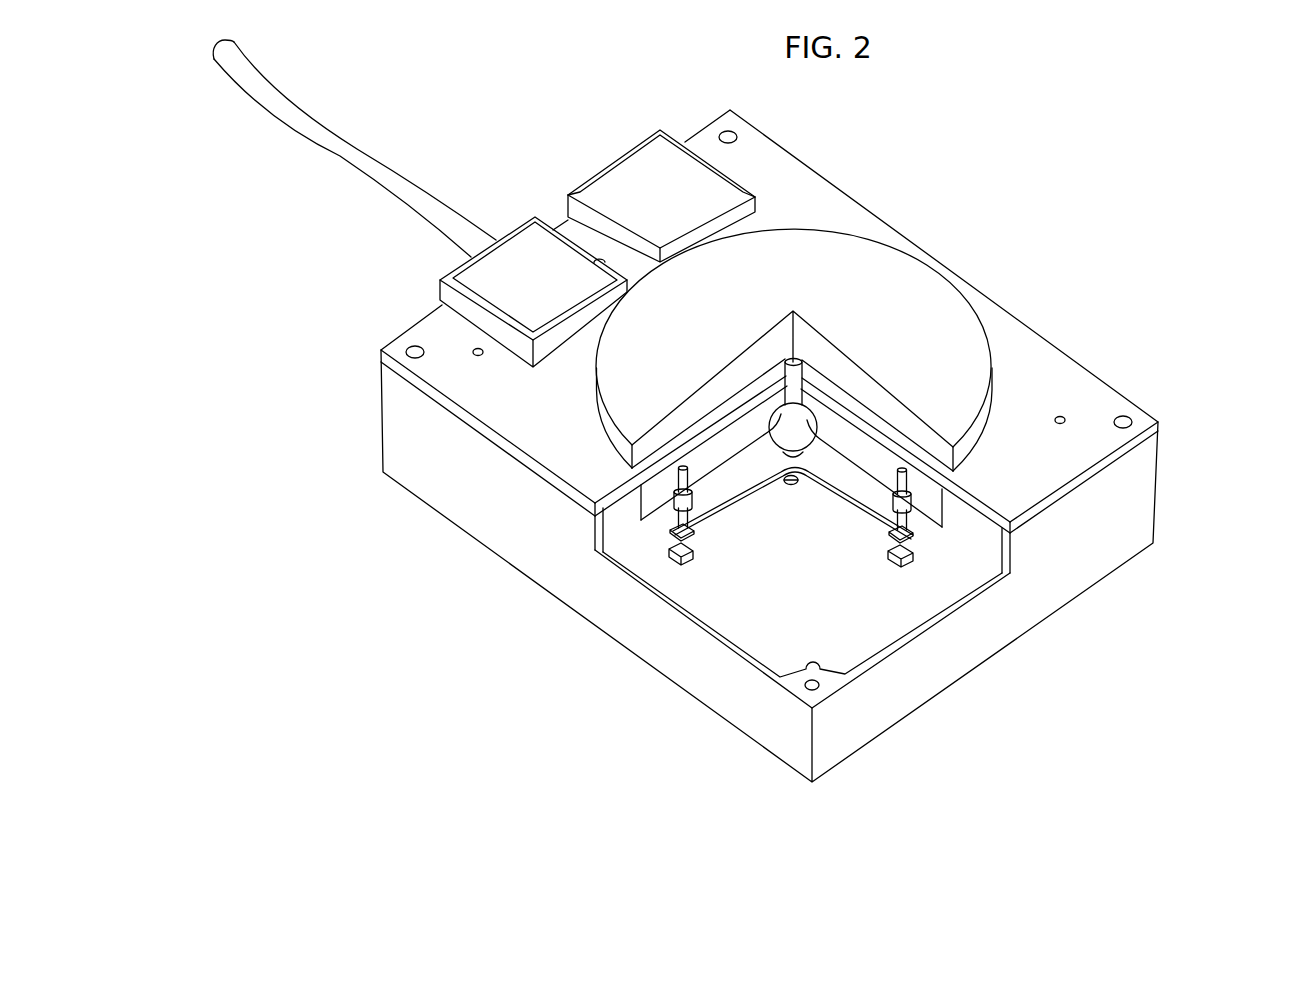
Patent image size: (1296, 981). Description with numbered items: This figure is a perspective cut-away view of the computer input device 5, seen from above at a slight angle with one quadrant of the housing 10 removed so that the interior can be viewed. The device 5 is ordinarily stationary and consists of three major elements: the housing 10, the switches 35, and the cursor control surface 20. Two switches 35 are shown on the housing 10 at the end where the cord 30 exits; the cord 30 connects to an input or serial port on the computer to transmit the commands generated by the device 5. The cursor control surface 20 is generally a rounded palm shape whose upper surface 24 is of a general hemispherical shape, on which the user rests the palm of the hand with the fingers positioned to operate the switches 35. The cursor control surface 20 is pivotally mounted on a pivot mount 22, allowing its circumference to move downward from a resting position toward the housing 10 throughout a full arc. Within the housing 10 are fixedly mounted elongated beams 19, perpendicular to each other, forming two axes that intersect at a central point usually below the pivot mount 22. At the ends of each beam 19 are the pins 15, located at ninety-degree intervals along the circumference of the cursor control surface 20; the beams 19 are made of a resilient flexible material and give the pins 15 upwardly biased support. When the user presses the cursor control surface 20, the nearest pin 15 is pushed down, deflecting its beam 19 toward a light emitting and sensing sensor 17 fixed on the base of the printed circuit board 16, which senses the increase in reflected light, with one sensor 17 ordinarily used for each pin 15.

The computer input device 5 is at (1170, 415).
The housing 10 is at (1142, 567).
The pins 15 is at (688, 502).
The printed circuit board 16 is at (768, 633).
The light emitting and sensing sensors 17 is at (678, 560).
The elongated beams 19 is at (847, 490).
The cursor control surface 20 is at (998, 397).
The pivot mount 22 is at (797, 448).
The upper surface 24 is at (932, 285).
The cord 30 is at (298, 125).
The switches 35 is at (620, 188).